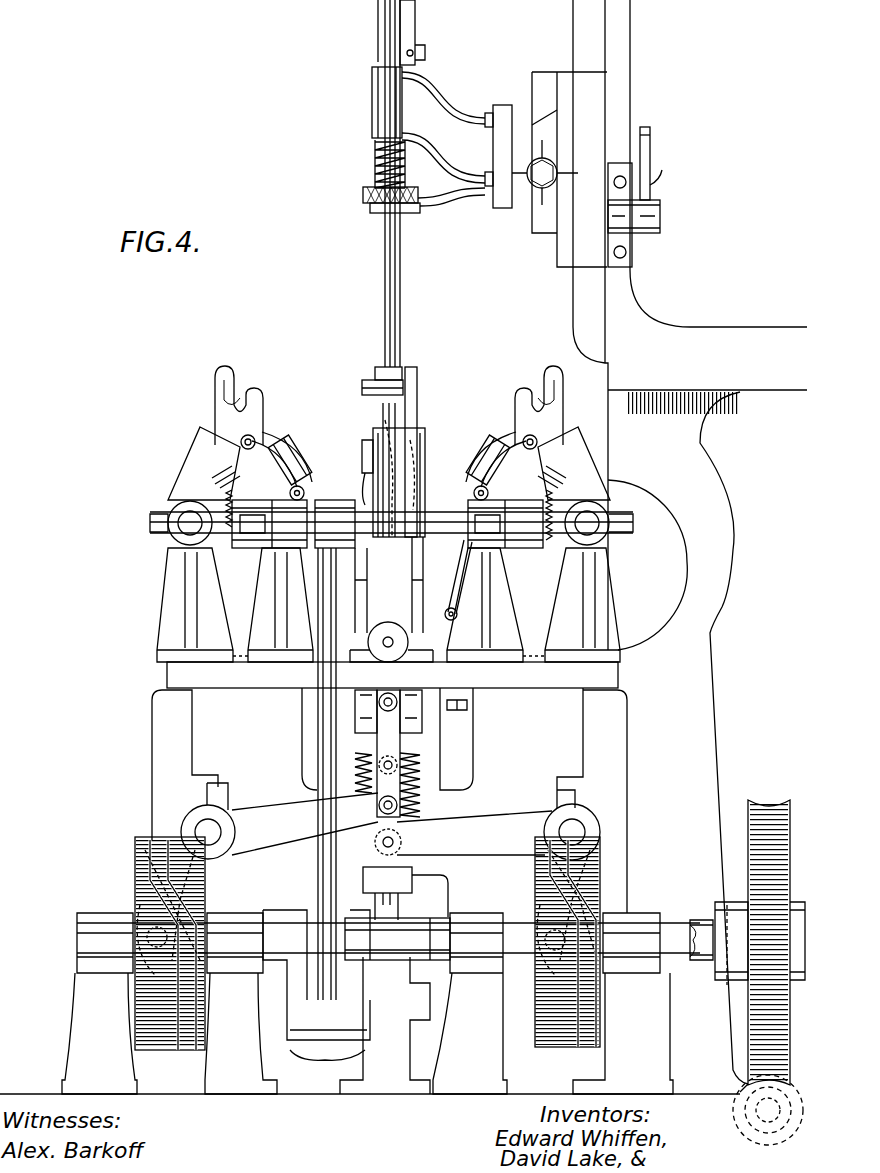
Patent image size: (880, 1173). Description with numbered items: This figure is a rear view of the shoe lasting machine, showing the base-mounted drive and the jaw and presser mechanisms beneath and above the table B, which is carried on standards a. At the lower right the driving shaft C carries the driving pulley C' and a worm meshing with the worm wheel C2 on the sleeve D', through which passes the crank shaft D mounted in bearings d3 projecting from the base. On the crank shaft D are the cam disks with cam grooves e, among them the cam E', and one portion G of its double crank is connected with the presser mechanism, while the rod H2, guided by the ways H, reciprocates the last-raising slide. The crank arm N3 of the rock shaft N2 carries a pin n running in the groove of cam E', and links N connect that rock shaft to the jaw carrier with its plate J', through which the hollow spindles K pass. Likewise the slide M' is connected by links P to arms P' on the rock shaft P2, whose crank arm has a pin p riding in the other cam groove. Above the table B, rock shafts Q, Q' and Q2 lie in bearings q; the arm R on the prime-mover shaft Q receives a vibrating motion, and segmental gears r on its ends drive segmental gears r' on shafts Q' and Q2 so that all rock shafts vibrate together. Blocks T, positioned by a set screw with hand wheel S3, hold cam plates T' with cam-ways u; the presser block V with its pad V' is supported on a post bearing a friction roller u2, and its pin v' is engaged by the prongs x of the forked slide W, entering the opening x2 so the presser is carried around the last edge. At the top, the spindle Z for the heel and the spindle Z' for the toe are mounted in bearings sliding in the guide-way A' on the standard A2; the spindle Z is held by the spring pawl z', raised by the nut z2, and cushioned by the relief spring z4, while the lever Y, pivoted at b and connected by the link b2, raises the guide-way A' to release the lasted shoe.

The standard A2 is at (690, 542).
The guide-way A' is at (546, 169).
The pivot b is at (641, 215).
The link b2 is at (652, 160).
The lever Y is at (658, 167).
The spindle Z is at (390, 183).
The spring pawl z' is at (416, 32).
The relief spring z4 is at (375, 160).
The opening between prongs x2 is at (380, 195).
The nut z2 is at (493, 150).
The spindle Z' is at (392, 439).
The cam plate T' is at (395, 478).
The presser block V is at (360, 470).
The slide W is at (389, 463).
The prongs x is at (389, 405).
The pin v' is at (389, 427).
The presser pad V' is at (389, 455).
The friction roller u2 is at (306, 491).
The rock shaft Q is at (391, 511).
The longitudinal rock shaft Q2 is at (181, 523).
The longitudinal rock shaft Q' is at (599, 523).
The segmental gear r is at (389, 510).
The segmental gear r' is at (389, 477).
The block T is at (387, 515).
The arm R is at (335, 750).
The cam-way u is at (458, 580).
The hollow spindle K is at (432, 578).
The bearings q is at (388, 605).
The hand wheel S3 is at (391, 642).
The table B is at (392, 672).
The standards a is at (389, 800).
The plate J' is at (414, 739).
The slide M' is at (397, 775).
The link N is at (388, 753).
The rock shaft N2 is at (208, 821).
The crank arm N3 is at (305, 824).
The link P is at (376, 841).
The arm P' is at (474, 833).
The rock shaft P2 is at (572, 832).
The ways H is at (375, 905).
The rod H2 is at (397, 939).
The bearings d3 is at (370, 1003).
The crank portion G is at (316, 987).
The cam E' is at (156, 943).
The pin n is at (152, 940).
The cam groove e is at (371, 905).
The pin p is at (567, 942).
The crank shaft D is at (694, 940).
The sleeve D' is at (750, 939).
The worm wheel C2 is at (769, 931).
The driving shaft C is at (768, 1110).
The driving pulley C' is at (735, 1086).